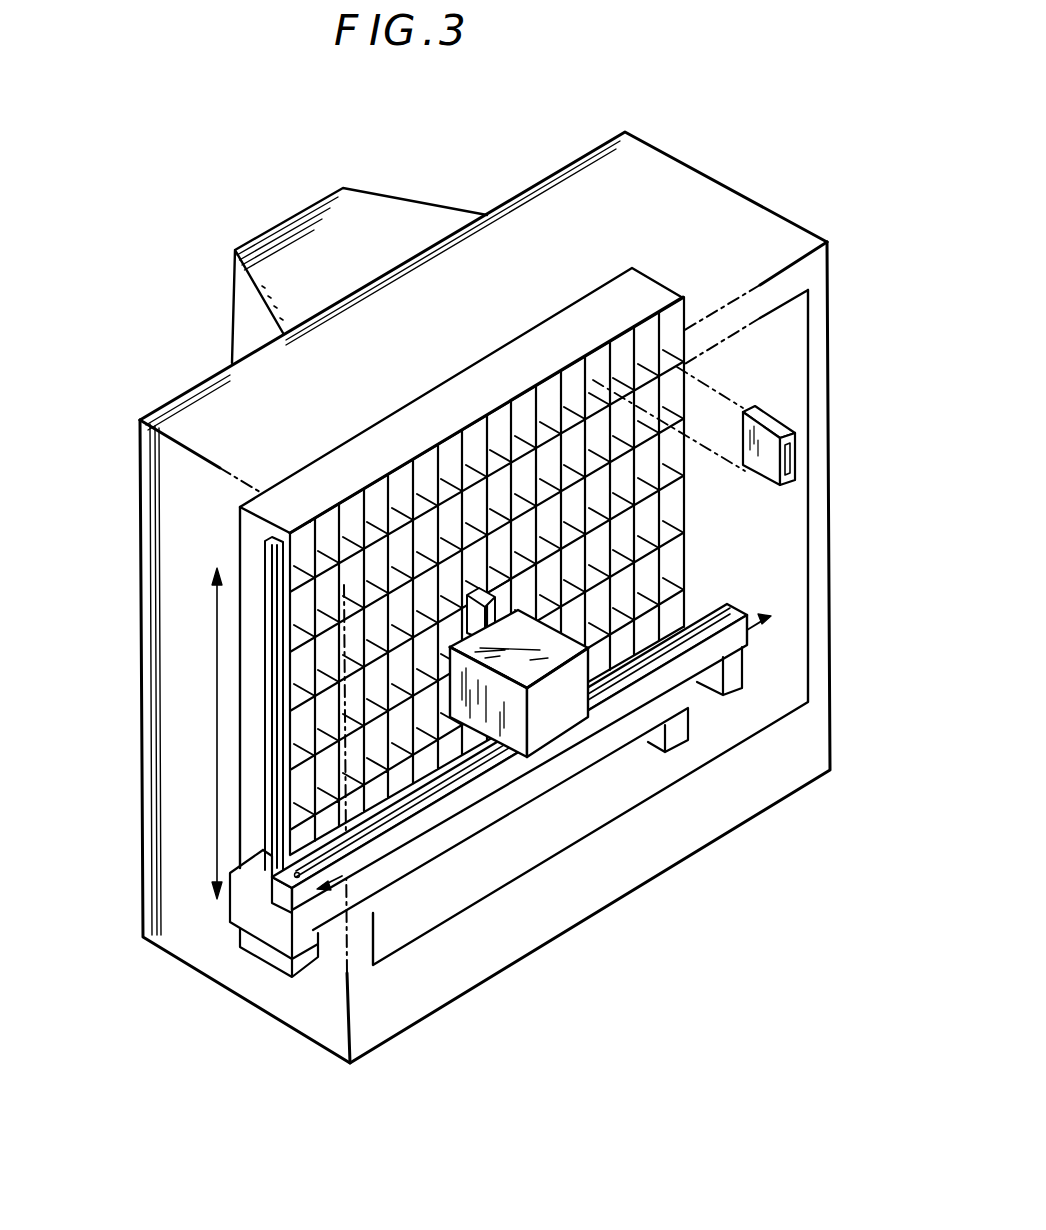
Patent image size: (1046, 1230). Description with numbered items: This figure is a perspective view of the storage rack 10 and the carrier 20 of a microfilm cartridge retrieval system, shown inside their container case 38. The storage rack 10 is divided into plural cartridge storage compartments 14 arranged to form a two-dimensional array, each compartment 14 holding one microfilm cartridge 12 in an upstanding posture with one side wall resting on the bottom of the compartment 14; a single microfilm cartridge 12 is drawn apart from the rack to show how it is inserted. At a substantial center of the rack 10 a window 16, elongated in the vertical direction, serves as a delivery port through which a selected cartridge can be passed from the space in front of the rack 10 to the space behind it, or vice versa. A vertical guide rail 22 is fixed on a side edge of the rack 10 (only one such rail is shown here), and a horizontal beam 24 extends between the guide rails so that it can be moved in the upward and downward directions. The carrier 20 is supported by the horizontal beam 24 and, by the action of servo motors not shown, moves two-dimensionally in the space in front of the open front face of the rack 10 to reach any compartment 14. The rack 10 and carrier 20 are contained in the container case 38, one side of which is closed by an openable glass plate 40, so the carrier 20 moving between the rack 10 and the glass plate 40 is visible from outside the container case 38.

The storage rack 10 is at (655, 282).
The microfilm cartridge 12 is at (775, 425).
The cartridge storage compartment 14 is at (675, 573).
The window 16 is at (497, 548).
The carrier 20 is at (555, 715).
The vertical guide rail 22 is at (267, 550).
The horizontal beam 24 is at (472, 808).
The container case 38 is at (760, 203).
The glass plate 40 is at (790, 317).